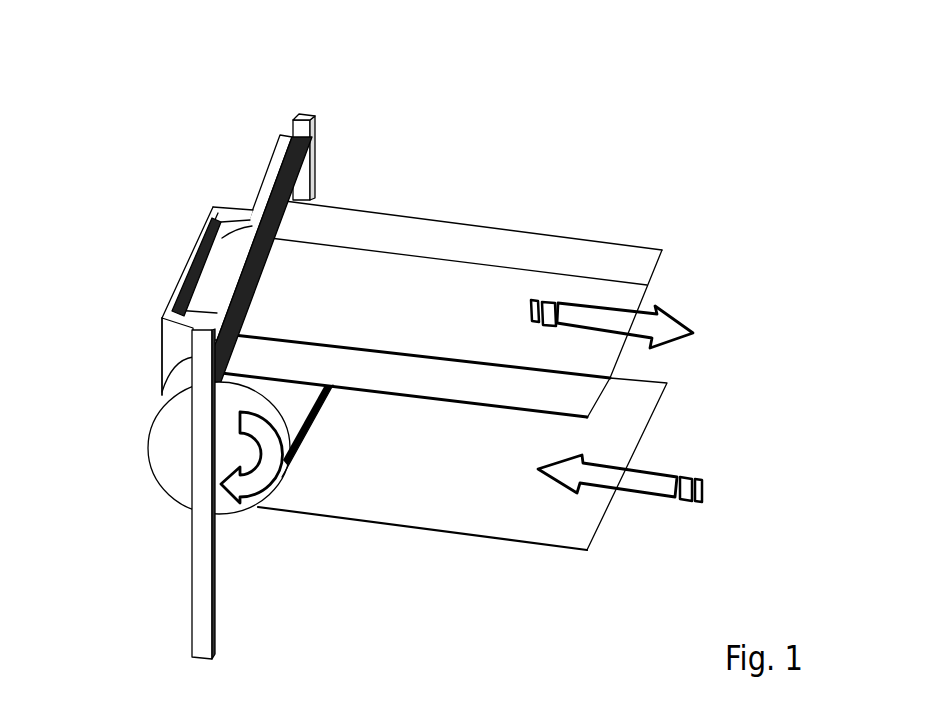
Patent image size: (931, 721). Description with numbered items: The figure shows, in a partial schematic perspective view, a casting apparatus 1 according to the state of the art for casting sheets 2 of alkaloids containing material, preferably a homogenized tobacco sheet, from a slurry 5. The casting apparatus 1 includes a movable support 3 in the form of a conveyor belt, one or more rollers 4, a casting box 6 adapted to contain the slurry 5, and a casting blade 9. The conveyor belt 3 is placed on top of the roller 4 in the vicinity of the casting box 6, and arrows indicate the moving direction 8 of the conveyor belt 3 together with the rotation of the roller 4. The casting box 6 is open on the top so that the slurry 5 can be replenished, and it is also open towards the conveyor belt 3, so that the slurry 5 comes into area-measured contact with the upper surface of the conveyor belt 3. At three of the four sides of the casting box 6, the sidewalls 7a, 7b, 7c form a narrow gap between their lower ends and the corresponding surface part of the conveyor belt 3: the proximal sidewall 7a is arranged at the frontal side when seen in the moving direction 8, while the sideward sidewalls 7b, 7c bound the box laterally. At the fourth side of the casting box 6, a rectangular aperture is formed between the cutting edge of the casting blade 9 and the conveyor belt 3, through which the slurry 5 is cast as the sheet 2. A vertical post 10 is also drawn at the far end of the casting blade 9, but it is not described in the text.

The casting apparatus 1 is at (556, 152).
The sheet 2 is at (390, 276).
The movable support 3 is at (626, 251).
The roller 4 is at (164, 458).
The slurry 5 is at (218, 242).
The casting box 6 is at (176, 237).
The proximal sidewall 7a is at (200, 240).
The sideward sidewall 7b is at (173, 337).
The sideward sidewall 7c is at (242, 218).
The moving direction 8 is at (672, 330).
The casting blade 9 is at (305, 184).
The post 10 is at (307, 110).